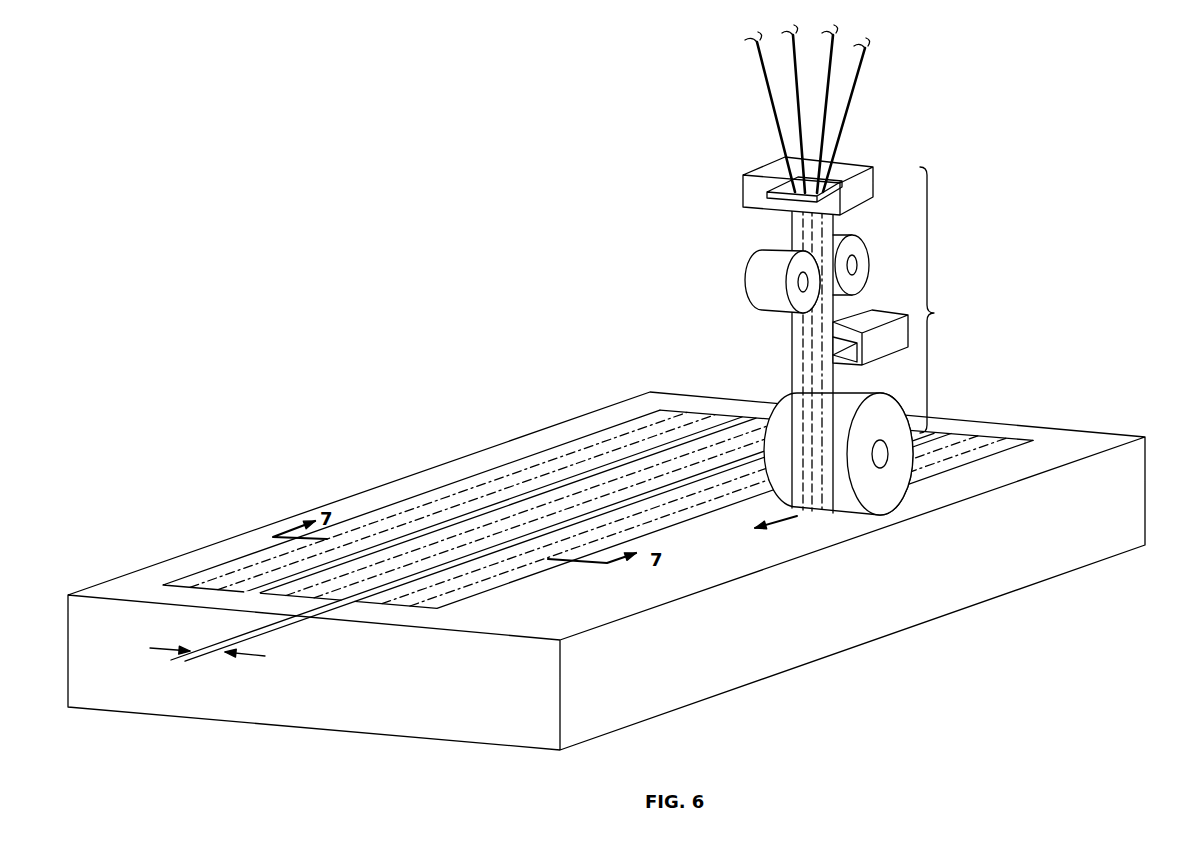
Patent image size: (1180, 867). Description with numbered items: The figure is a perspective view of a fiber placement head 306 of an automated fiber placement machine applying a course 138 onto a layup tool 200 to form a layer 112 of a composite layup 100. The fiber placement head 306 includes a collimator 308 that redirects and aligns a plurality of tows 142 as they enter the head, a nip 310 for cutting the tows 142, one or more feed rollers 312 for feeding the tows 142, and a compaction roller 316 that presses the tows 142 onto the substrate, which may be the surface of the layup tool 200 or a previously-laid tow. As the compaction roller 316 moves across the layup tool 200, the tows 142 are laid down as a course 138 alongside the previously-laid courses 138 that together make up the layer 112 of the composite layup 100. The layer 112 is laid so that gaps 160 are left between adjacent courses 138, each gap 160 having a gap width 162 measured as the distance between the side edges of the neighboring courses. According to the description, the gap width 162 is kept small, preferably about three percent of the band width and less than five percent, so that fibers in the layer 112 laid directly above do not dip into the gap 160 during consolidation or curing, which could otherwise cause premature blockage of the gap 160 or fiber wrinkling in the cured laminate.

The composite layup 100 is at (617, 422).
The layer 112 is at (693, 412).
The course 138 is at (787, 234).
The tows 142 is at (857, 87).
The gap 160 is at (257, 594).
The gap width 162 is at (272, 657).
The layup tool 200 is at (1083, 428).
The fiber placement head 306 is at (948, 300).
The collimator 308 is at (743, 180).
The nip 310 is at (887, 316).
The feed rollers 312 is at (743, 262).
The compaction roller 316 is at (786, 402).